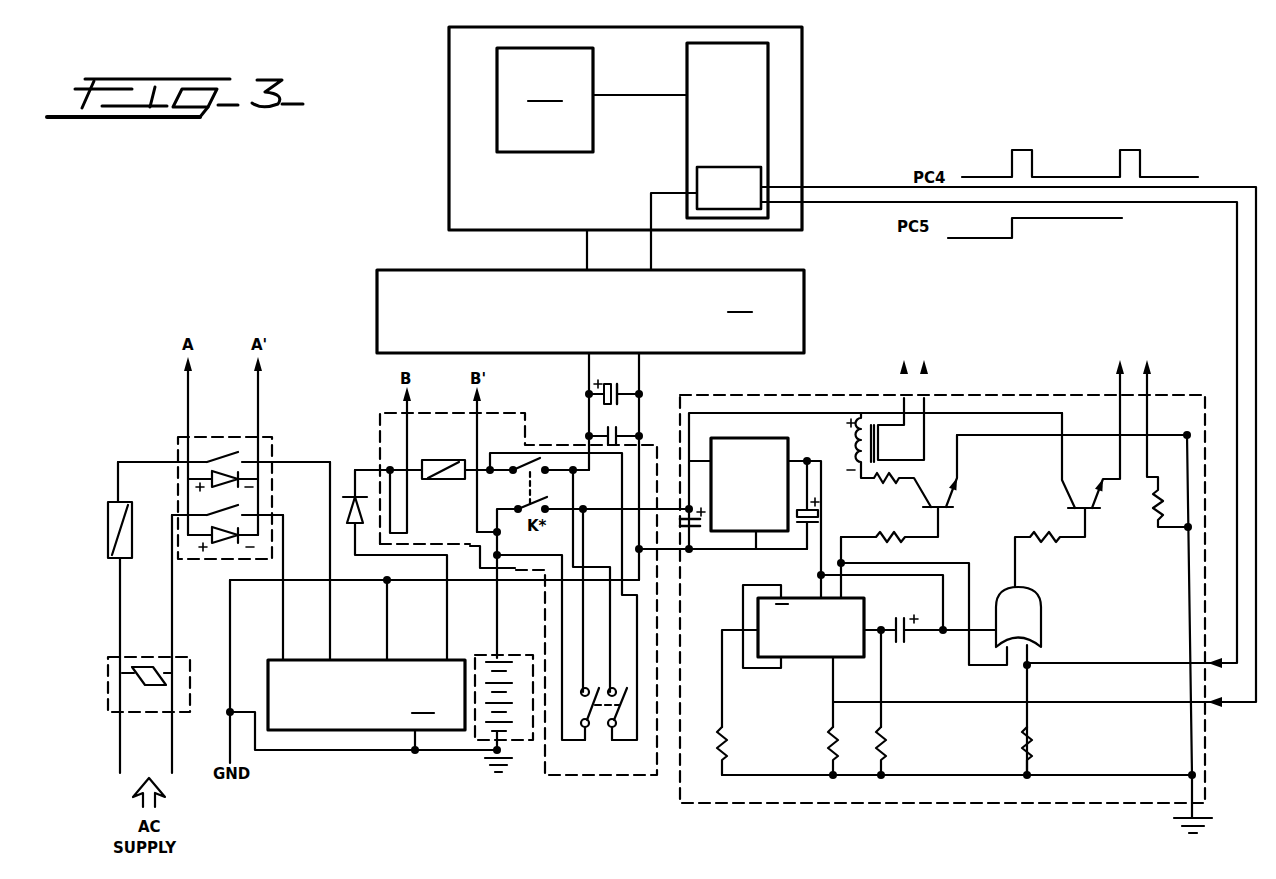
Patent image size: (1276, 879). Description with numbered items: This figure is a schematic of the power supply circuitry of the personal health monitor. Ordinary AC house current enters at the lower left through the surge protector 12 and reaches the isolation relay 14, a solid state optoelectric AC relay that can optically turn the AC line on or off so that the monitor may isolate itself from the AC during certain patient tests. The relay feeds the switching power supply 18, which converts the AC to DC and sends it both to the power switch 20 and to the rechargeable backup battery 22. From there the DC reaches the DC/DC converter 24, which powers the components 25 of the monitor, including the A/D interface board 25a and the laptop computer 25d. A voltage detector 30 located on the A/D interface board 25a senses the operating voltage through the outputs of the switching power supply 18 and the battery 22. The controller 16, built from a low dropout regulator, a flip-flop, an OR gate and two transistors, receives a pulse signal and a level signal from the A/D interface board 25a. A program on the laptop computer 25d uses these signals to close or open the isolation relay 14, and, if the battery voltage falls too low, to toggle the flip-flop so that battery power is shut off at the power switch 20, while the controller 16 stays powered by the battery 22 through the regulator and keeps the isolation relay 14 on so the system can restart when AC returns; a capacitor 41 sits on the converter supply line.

The surge protector 12 is at (102, 670).
The isolation relay 14 is at (273, 447).
The controller 16 is at (679, 812).
The switching power supply 18 is at (366, 695).
The power switch 20 is at (647, 776).
The rechargeable backup battery 22 is at (533, 741).
The DC/DC converter 24 is at (590, 311).
The components of the personal health monitor 25 is at (803, 42).
The A/D interface board 25a is at (771, 92).
The laptop computer 25d is at (545, 100).
The voltage detector 30 is at (742, 165).
The capacitor 41 is at (588, 365).